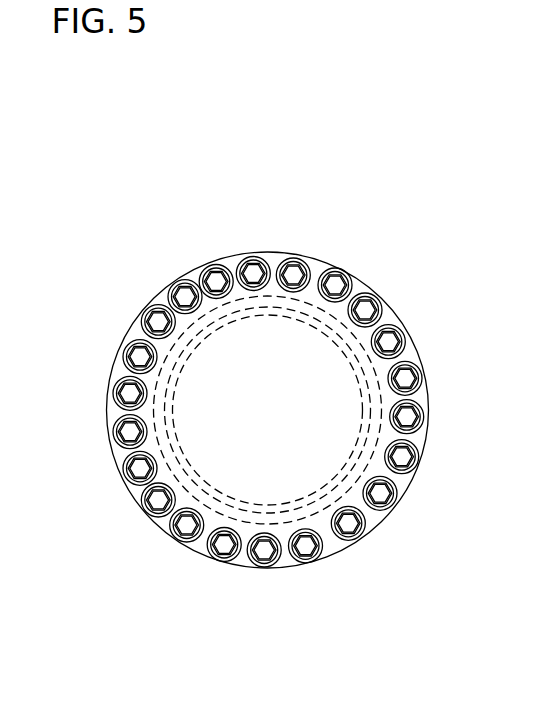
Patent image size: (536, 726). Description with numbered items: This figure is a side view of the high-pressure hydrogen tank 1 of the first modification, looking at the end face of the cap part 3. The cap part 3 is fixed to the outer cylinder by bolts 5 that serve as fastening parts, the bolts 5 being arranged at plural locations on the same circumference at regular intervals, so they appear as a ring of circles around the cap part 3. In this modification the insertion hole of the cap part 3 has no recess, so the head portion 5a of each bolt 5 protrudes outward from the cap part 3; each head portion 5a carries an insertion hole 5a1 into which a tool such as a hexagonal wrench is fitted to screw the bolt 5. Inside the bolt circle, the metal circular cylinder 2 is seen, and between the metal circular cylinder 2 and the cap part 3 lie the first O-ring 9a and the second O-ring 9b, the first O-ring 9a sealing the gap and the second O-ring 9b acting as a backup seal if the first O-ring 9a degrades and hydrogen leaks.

The high-pressure hydrogen tank 1 is at (288, 167).
The metal circular cylinder 2 is at (338, 498).
The cap part 3 is at (363, 287).
The bolt 5 is at (327, 268).
The head portion 5a is at (281, 263).
The insertion hole 5a1 is at (294, 270).
The first O-ring 9a is at (280, 512).
The second O-ring 9b is at (268, 410).